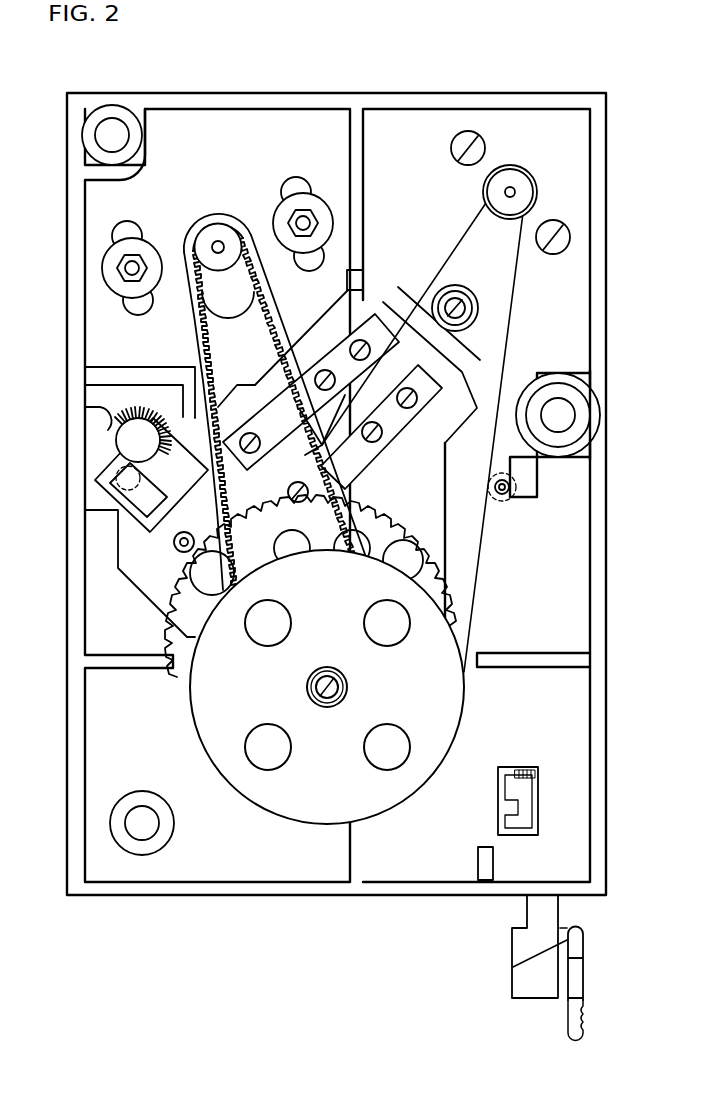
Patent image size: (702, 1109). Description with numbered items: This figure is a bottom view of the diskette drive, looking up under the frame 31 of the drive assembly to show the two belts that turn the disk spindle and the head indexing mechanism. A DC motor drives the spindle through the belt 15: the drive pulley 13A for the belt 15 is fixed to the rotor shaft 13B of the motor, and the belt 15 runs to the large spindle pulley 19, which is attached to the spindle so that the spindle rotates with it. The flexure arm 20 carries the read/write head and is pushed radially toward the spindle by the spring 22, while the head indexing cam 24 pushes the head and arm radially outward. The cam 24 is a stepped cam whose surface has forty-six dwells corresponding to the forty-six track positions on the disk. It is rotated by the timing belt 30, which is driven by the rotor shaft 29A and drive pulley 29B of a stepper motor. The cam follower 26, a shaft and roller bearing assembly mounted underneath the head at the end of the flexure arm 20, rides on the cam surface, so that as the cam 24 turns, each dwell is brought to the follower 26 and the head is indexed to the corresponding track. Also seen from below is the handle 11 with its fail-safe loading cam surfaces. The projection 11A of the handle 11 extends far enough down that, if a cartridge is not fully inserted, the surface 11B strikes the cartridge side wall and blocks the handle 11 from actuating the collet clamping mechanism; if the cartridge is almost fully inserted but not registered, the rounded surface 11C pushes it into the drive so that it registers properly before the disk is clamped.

The handle 11 is at (584, 975).
The projection 11A is at (578, 948).
The surface 11B is at (565, 949).
The rounded surface 11C is at (576, 923).
The drive pulley 13A is at (522, 187).
The rotor shaft 13B is at (504, 193).
The belt 15 is at (511, 318).
The spindle pulley 19 is at (290, 802).
The flexure arm 20 is at (150, 545).
The spring 22 is at (148, 402).
The head indexing cam 24 is at (177, 603).
The cam follower 26 is at (185, 531).
The rotor shaft 29A is at (212, 243).
The drive pulley 29B is at (225, 232).
The timing belt 30 is at (200, 333).
The frame 31 is at (565, 600).